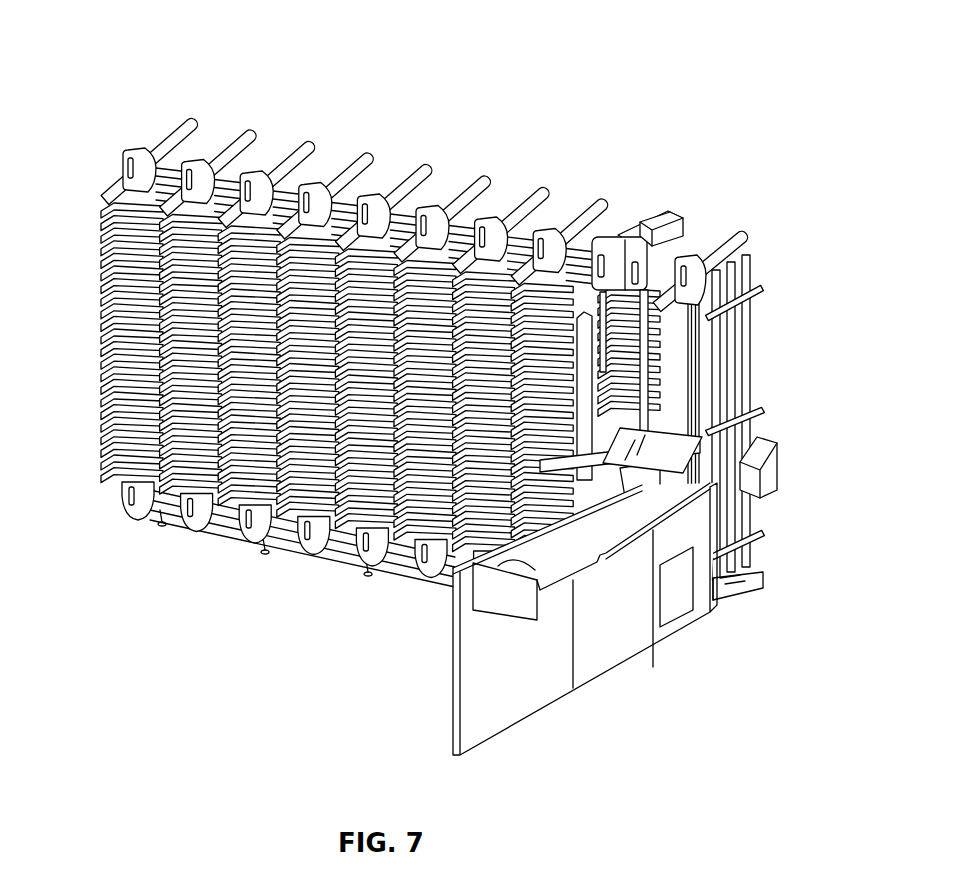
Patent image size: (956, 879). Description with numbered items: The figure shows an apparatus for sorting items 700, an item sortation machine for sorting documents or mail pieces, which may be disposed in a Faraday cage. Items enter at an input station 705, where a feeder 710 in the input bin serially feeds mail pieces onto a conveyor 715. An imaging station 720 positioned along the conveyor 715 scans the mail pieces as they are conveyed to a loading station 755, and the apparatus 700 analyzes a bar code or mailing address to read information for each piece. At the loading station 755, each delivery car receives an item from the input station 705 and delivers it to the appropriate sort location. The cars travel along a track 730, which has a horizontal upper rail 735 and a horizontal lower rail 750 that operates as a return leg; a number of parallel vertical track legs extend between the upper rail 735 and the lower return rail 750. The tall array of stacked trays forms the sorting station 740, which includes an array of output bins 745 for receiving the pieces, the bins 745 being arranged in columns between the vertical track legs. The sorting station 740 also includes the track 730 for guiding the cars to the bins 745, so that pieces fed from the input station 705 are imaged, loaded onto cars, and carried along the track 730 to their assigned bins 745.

The apparatus for sorting items 700 is at (533, 45).
The input station 705 is at (590, 685).
The feeder 710 is at (542, 578).
The conveyor 715 is at (600, 497).
The imaging station 720 is at (752, 542).
The track 730 is at (562, 203).
The horizontal upper rail 735 is at (440, 190).
The sorting station 740 is at (286, 115).
The output bins 745 is at (120, 200).
The horizontal lower rail 750 is at (138, 505).
The loading station 755 is at (757, 497).